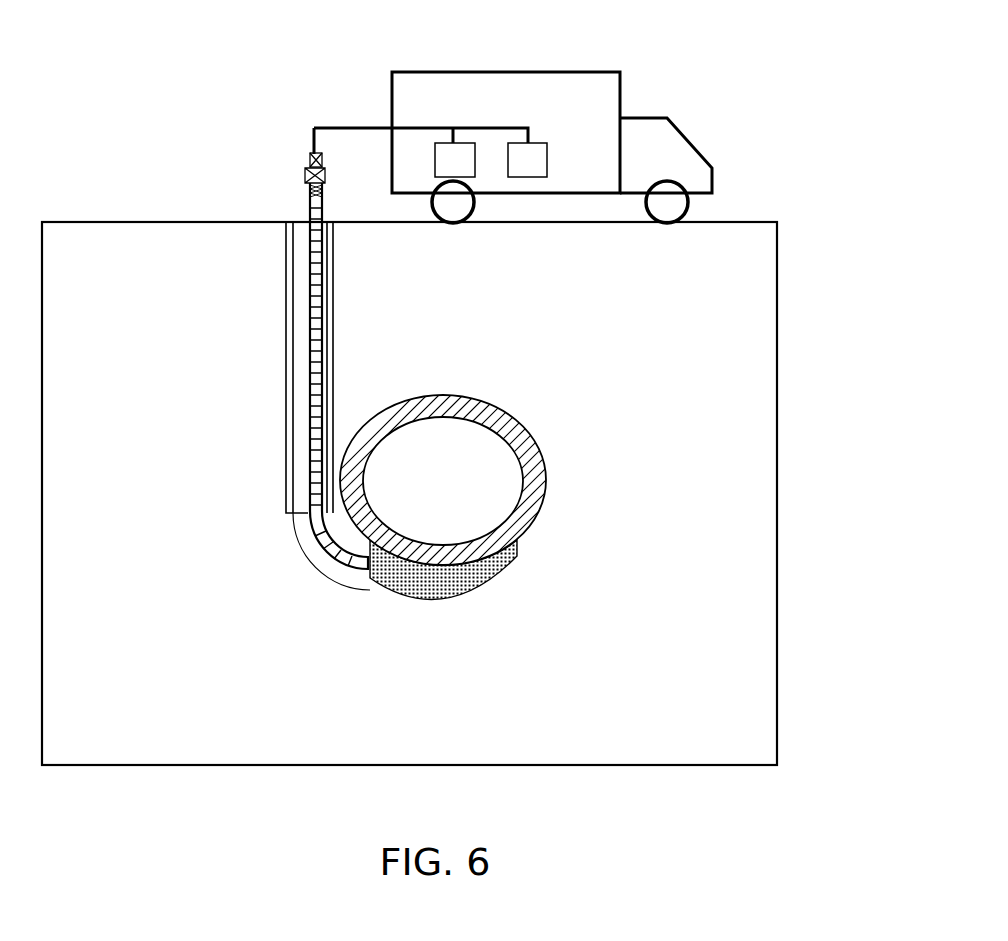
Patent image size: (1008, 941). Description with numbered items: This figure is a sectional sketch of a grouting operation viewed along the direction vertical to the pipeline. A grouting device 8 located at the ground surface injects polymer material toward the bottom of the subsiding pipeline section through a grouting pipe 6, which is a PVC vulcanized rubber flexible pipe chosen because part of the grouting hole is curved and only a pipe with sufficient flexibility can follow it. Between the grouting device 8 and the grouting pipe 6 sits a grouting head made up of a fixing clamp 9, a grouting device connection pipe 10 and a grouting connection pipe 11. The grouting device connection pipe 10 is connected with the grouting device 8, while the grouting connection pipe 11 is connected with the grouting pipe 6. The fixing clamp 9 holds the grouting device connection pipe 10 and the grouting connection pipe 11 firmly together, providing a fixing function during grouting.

The grouting pipe 6 is at (313, 318).
The grouting device 8 is at (537, 143).
The fixing clamp 9 is at (312, 157).
The grouting device connection pipe 10 is at (427, 128).
The grouting connection pipe 11 is at (307, 180).